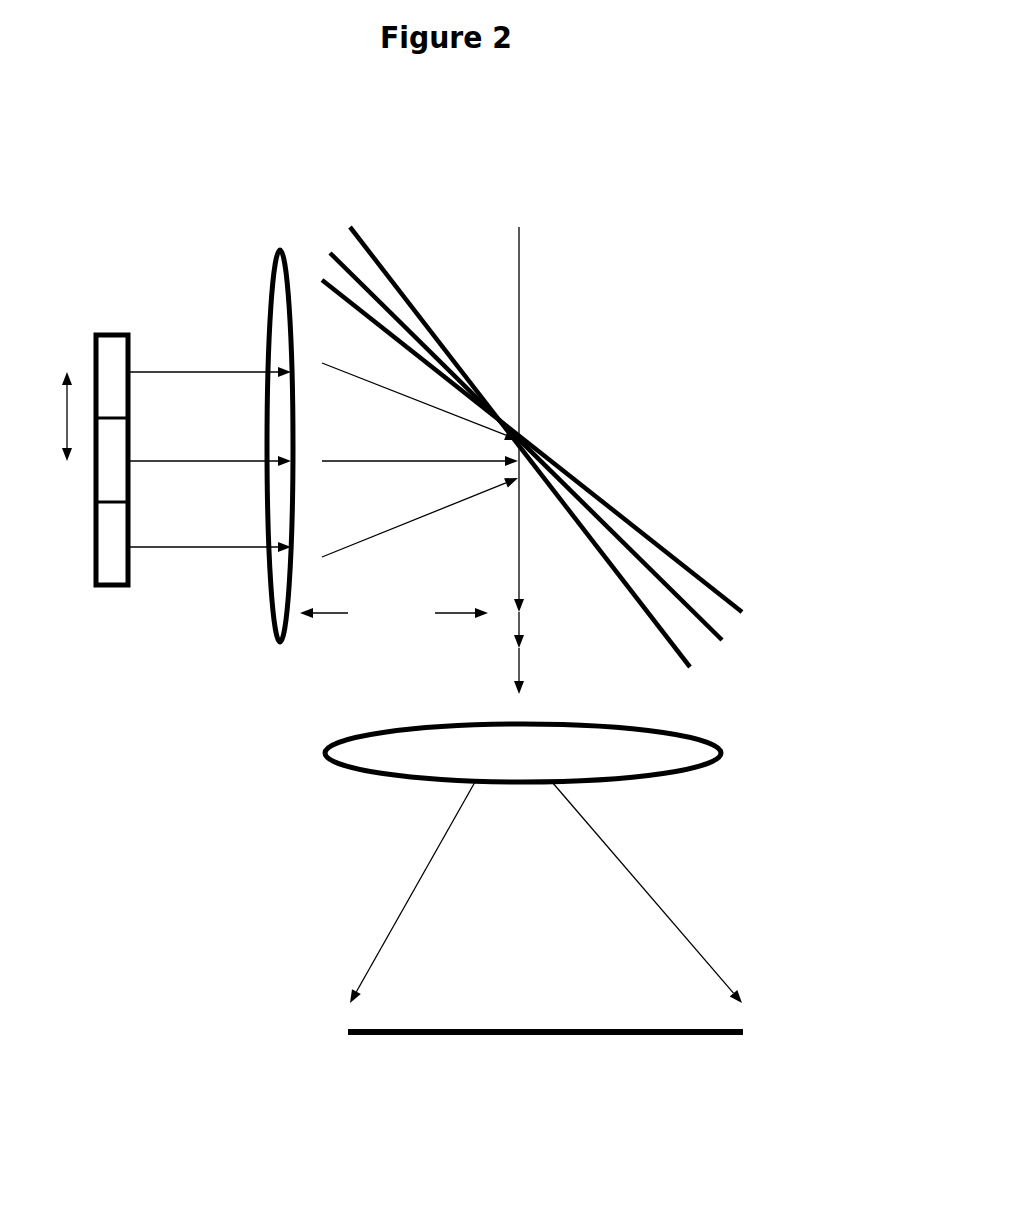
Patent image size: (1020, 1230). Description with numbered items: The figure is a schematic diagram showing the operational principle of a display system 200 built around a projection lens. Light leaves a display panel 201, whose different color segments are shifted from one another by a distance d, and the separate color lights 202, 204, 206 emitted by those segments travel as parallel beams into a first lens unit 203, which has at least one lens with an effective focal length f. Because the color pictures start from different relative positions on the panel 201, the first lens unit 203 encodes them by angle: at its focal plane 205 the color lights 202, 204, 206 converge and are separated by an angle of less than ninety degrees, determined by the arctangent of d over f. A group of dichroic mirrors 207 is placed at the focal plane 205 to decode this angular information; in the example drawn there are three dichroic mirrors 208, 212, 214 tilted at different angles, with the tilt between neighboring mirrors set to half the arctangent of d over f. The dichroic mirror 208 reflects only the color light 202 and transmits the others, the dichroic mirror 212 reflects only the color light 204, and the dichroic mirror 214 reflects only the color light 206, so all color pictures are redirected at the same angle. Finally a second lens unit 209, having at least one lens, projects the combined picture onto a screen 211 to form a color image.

The display system 200 is at (158, 808).
The display panel 201 is at (112, 314).
The color light 202 is at (196, 353).
The first lens unit 203 is at (278, 234).
The color light 204 is at (196, 442).
The focal plane 205 is at (519, 438).
The color light 206 is at (196, 569).
The dichroic mirrors 207 is at (582, 457).
The dichroic mirror 208 is at (590, 468).
The second lens unit 209 is at (748, 753).
The screen 211 is at (768, 1032).
The dichroic mirror 212 is at (646, 548).
The dichroic mirror 214 is at (648, 591).